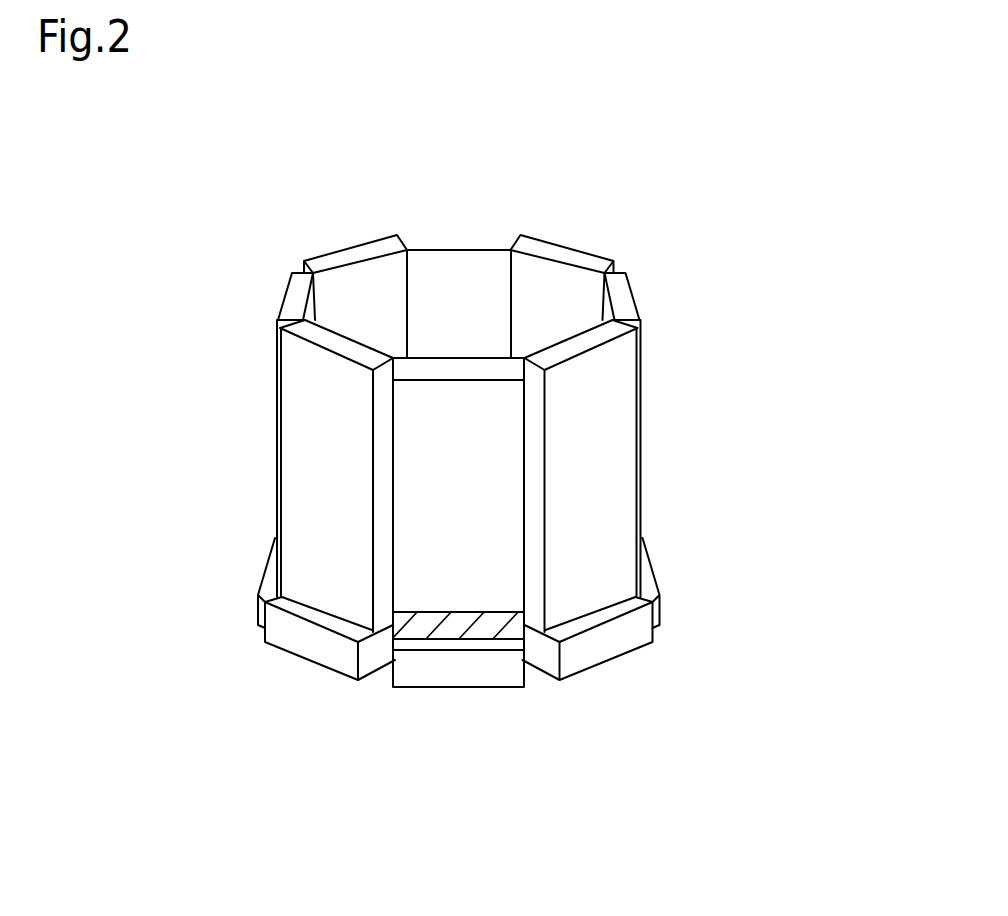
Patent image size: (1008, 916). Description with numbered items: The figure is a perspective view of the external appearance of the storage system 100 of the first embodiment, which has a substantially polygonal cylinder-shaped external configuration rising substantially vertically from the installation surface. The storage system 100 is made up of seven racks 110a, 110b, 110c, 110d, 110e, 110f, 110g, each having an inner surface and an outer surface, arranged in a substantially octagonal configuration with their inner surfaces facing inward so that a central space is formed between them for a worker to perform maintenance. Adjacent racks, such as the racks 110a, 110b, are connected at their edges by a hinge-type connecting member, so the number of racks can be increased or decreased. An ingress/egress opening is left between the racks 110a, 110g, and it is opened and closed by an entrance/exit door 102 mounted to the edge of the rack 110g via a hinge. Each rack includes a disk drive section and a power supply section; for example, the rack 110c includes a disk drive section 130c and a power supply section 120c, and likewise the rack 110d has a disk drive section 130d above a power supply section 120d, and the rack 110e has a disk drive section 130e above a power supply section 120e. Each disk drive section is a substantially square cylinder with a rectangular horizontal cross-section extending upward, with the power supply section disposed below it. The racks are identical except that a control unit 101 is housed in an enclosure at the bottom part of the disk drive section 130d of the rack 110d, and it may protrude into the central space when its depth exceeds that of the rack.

The storage system 100 is at (437, 146).
The control unit 101 is at (482, 627).
The entrance/exit door 102 is at (460, 247).
The rack 110a is at (583, 246).
The rack 110b is at (637, 293).
The rack 110c is at (681, 500).
The rack 110d is at (427, 594).
The rack 110e is at (225, 500).
The rack 110f is at (290, 293).
The rack 110g is at (350, 246).
The power supply section 120c is at (635, 595).
The power supply section 120d is at (458, 709).
The power supply section 120e is at (287, 637).
The disk drive section 130c is at (612, 432).
The disk drive section 130d is at (440, 573).
The disk drive section 130e is at (290, 511).